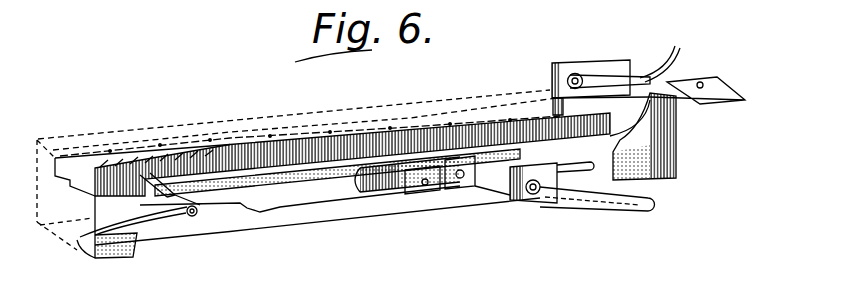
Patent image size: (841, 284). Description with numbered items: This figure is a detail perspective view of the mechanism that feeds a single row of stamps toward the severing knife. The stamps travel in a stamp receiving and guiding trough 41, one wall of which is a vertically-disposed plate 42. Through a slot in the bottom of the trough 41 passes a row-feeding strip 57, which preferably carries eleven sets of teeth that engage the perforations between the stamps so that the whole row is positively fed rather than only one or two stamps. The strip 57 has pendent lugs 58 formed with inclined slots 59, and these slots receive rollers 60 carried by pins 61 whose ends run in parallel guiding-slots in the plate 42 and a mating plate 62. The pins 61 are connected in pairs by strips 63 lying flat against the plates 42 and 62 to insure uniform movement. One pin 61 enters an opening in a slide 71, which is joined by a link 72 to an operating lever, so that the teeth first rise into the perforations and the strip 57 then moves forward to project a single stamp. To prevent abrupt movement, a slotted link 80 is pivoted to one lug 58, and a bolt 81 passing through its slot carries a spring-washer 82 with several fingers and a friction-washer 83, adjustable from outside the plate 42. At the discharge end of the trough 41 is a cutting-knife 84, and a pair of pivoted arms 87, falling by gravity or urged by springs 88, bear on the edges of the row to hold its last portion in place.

The stamp receiving and guiding trough 41 is at (124, 150).
The vertically-disposed plate 42 is at (657, 149).
The row-feeding strip 57 is at (325, 137).
The pendent lugs 58 is at (148, 228).
The inclined slots 59 is at (152, 220).
The rollers 60 is at (190, 216).
The pins 61 is at (197, 213).
The mating plate 62 is at (553, 100).
The strips 63 is at (196, 152).
The slide 71 is at (552, 204).
The link 72 is at (632, 207).
The slotted link 80 is at (457, 181).
The bolt 81 is at (408, 197).
The spring-washer 82 is at (427, 195).
The friction-washer 83 is at (388, 190).
The cutting-knife 84 is at (692, 104).
The pivoted arms 87 is at (608, 63).
The springs 88 is at (700, 80).